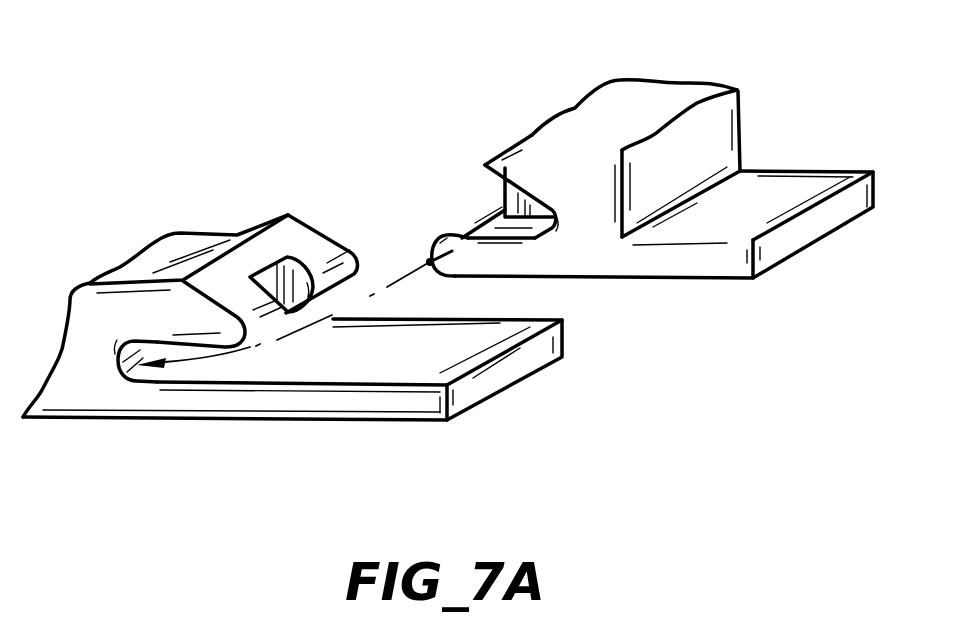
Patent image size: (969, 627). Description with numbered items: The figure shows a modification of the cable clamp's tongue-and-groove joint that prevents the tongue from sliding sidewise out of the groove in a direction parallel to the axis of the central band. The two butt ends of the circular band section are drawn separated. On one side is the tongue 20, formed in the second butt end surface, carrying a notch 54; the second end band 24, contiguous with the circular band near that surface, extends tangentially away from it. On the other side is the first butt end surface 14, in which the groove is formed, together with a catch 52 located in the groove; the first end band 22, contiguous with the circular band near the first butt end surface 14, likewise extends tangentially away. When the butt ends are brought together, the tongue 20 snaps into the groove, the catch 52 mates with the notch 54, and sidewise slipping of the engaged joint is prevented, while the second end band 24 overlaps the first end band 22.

The first butt end surface 14 is at (450, 234).
The tongue 20 is at (218, 333).
The first end band 22 is at (657, 257).
The second end band 24 is at (407, 402).
The catch 52 is at (527, 217).
The notch 54 is at (297, 263).